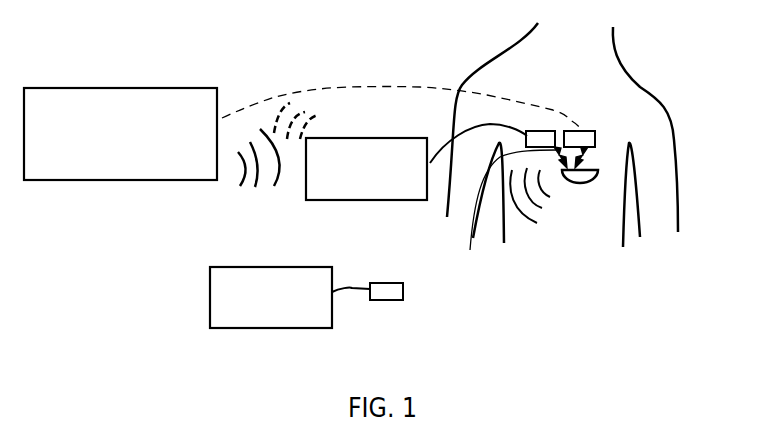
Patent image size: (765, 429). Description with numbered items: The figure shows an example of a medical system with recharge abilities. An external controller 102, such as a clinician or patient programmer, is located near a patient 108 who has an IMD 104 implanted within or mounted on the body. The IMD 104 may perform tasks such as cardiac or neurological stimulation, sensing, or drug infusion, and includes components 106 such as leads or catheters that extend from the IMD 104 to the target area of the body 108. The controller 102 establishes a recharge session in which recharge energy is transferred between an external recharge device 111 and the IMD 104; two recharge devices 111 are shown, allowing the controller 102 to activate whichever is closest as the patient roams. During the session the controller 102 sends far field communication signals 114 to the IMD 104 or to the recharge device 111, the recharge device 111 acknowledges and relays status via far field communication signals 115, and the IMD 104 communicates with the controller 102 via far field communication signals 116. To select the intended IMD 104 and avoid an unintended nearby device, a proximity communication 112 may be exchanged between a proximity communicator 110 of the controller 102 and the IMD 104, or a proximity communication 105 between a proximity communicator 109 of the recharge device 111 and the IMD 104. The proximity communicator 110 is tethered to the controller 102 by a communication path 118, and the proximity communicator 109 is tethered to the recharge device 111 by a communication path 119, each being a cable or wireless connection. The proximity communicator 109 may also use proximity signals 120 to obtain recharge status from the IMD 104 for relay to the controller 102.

The external controller 102 is at (124, 94).
The IMD 104 is at (590, 162).
The proximity communication 105 is at (468, 205).
The proximity signals 120 is at (468, 205).
The components 106 is at (557, 172).
The patient 108 is at (665, 95).
The proximity communicator 109 is at (545, 131).
The proximity communicator 110 is at (591, 131).
The external recharge device 111 is at (346, 138).
The proximity communication 112 is at (591, 166).
The far field communication signals 114 is at (258, 184).
The far field communication signals 115 is at (287, 108).
The far field communication signals 116 is at (527, 213).
The communication path 118 is at (347, 87).
The communication path 119 is at (442, 220).